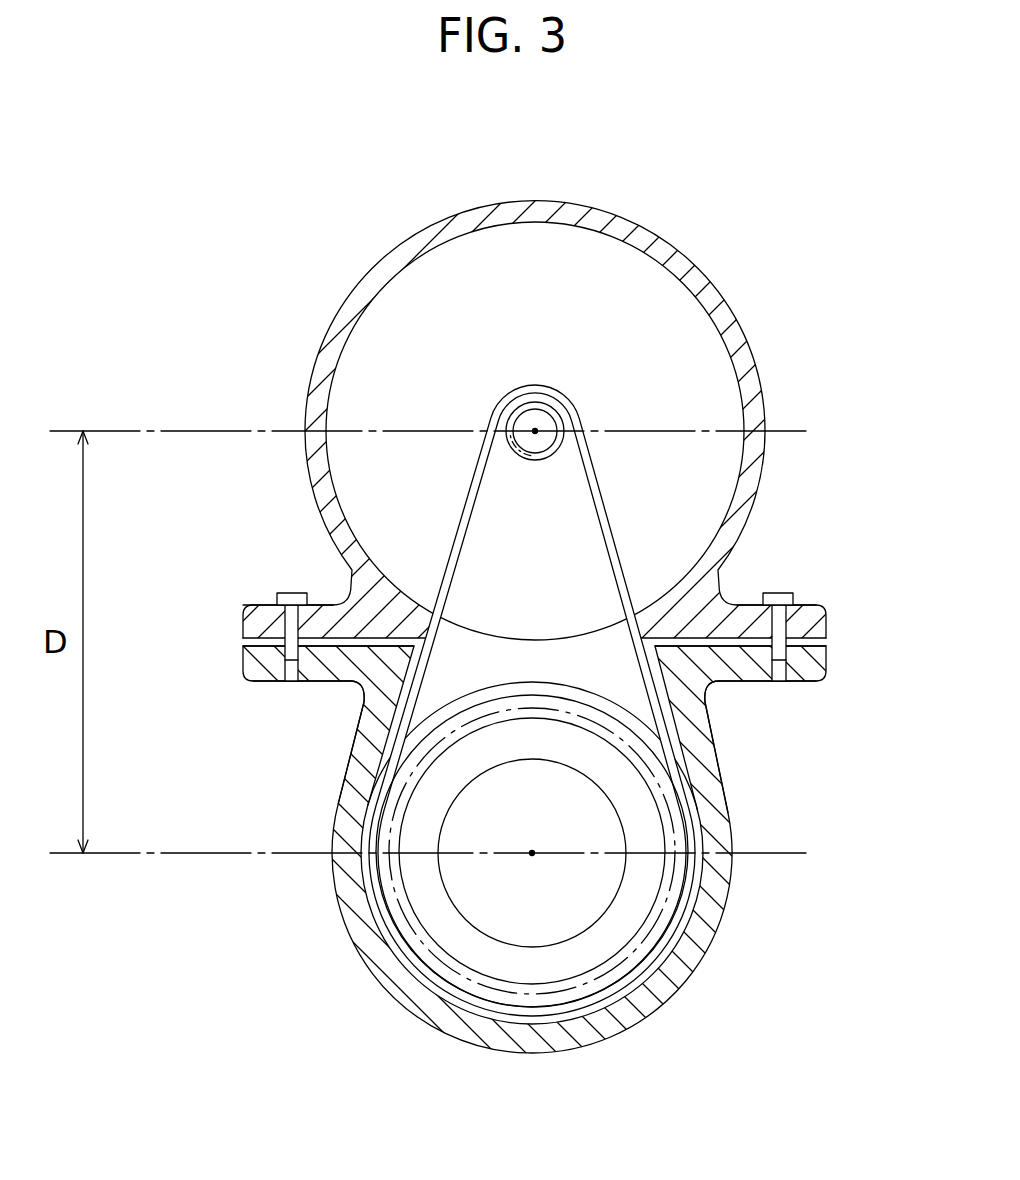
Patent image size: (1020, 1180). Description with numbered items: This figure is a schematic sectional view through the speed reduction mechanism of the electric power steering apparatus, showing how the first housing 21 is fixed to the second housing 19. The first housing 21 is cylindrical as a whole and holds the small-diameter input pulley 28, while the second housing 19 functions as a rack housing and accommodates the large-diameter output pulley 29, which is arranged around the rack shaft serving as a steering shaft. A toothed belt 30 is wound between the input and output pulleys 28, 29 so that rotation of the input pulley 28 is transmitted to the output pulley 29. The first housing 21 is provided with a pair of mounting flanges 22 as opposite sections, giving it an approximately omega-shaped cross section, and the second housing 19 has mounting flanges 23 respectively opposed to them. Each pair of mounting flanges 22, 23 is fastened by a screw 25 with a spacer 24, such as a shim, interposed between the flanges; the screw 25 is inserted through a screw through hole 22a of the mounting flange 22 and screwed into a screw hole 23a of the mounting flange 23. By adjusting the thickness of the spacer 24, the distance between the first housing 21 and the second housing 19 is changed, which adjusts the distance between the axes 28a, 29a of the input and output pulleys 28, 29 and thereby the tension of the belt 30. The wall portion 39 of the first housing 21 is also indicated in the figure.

The second housing 19 is at (365, 962).
The first housing 21 is at (606, 209).
The mounting flanges 22 is at (243, 622).
The screw through hole 22a is at (280, 624).
The mounting flanges 23 is at (243, 665).
The screw hole 23a is at (284, 662).
The spacer 24 is at (340, 650).
The screw 25 is at (291, 593).
The input pulley 28 is at (567, 403).
The axis of input pulley 28a is at (535, 431).
The output pulley 29 is at (592, 1003).
The axis of output pulley 29a is at (532, 853).
The belt 30 is at (607, 490).
The housing wall 39 is at (673, 257).